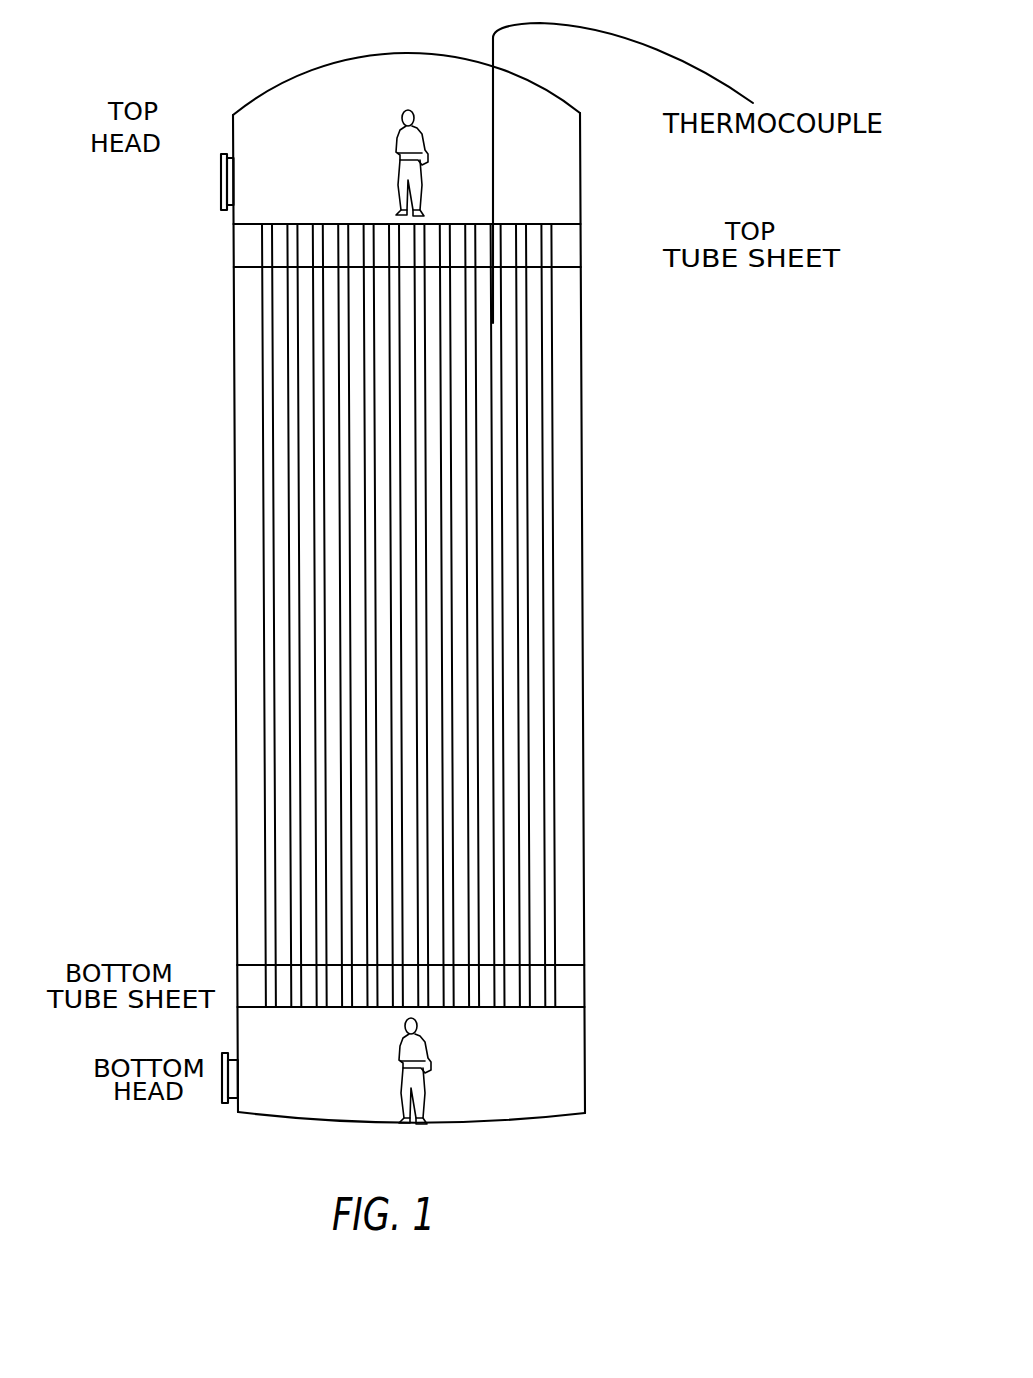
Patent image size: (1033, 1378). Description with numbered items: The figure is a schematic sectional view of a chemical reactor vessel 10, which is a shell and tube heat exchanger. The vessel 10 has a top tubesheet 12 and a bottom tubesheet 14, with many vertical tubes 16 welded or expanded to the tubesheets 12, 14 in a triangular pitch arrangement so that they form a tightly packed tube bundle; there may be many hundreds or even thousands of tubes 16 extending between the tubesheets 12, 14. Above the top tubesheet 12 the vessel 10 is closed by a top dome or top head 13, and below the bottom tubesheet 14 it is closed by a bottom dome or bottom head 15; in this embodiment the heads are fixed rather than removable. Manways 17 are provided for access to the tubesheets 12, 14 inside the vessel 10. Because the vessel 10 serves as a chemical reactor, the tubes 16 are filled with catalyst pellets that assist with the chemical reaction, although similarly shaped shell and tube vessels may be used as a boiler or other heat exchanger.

The vessel 10 is at (652, 369).
The top tubesheet 12 is at (576, 242).
The top dome (or top head) 13 is at (272, 86).
The bottom tubesheet 14 is at (578, 983).
The bottom dome (or bottom head) 15 is at (585, 1113).
The tubes 16 is at (477, 558).
The manways 17 is at (220, 197).